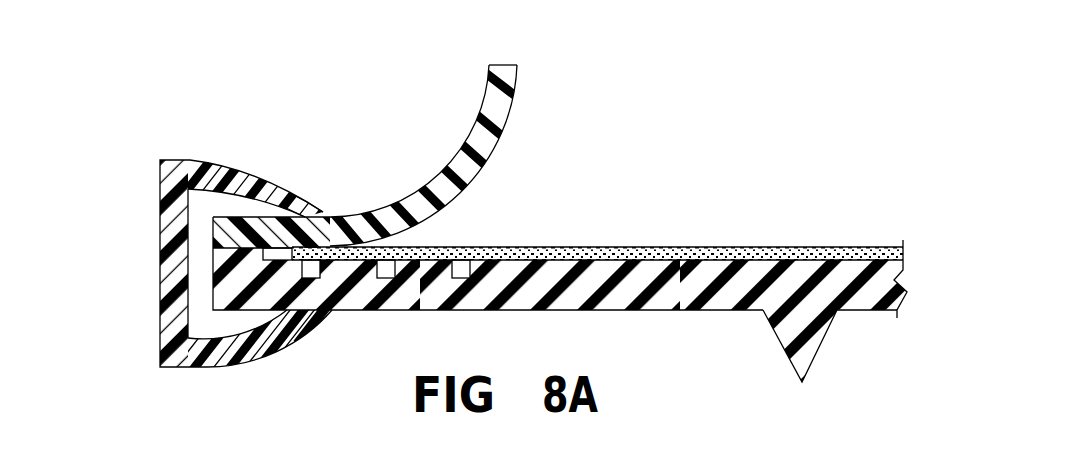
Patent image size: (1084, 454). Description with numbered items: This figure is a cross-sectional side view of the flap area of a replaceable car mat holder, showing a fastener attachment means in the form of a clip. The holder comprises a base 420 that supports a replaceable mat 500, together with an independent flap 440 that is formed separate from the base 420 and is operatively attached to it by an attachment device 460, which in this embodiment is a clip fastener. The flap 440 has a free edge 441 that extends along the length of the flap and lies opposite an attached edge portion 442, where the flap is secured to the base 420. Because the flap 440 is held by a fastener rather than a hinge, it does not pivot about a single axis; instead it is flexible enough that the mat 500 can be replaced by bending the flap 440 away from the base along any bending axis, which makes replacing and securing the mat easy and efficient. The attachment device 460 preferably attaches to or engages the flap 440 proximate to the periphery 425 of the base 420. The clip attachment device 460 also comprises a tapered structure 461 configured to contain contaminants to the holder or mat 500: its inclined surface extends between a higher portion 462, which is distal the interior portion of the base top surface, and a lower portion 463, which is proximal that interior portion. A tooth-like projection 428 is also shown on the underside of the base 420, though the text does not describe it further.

The base 420 is at (542, 227).
The periphery 425 is at (509, 303).
The attached edge portion 442 is at (542, 227).
The independent flap 440 is at (476, 141).
The free edge 441 is at (503, 65).
The retaining tooth 428 is at (820, 343).
The replaceable mat 500 is at (585, 247).
The attachment device 460 is at (542, 227).
The higher portion 462 is at (172, 160).
The tapered structure 461 is at (268, 159).
The lower portion 463 is at (317, 207).